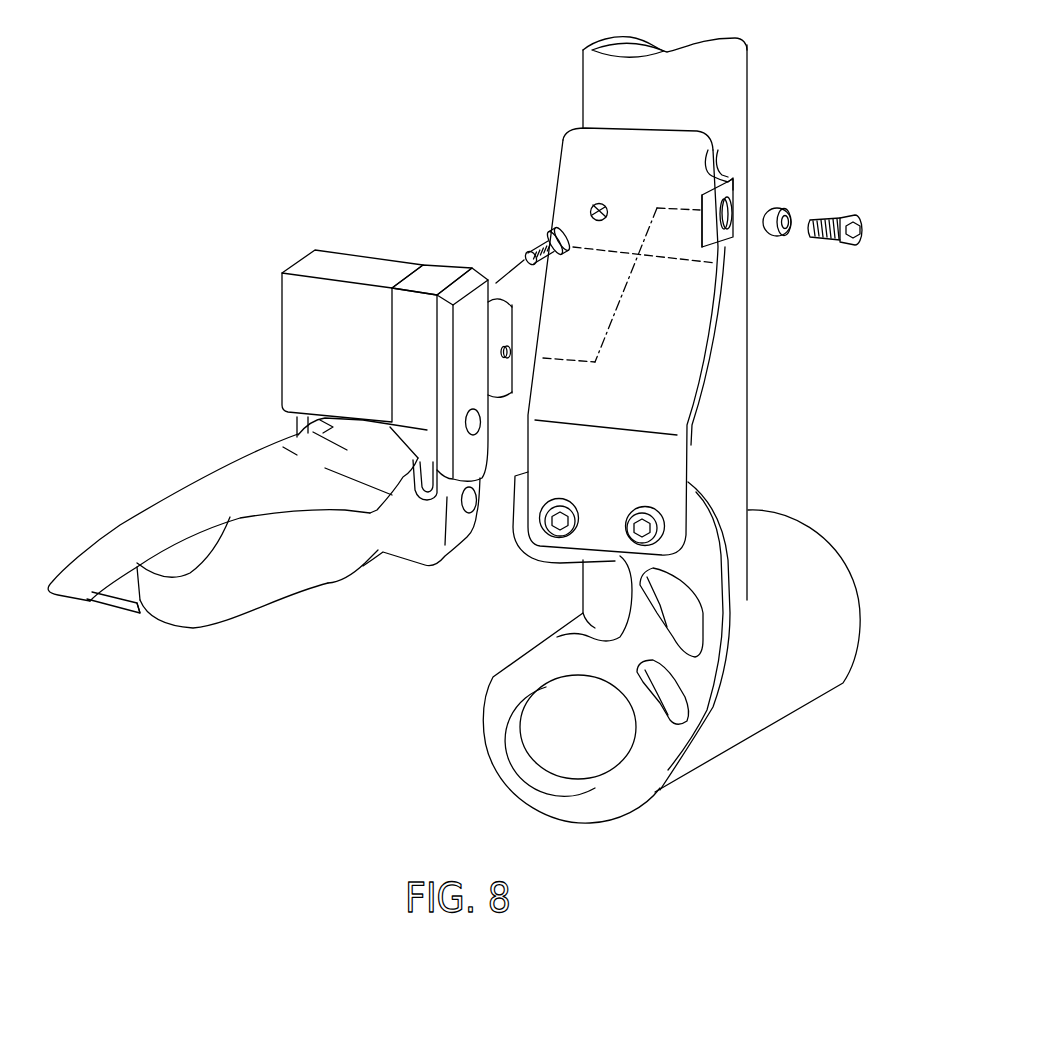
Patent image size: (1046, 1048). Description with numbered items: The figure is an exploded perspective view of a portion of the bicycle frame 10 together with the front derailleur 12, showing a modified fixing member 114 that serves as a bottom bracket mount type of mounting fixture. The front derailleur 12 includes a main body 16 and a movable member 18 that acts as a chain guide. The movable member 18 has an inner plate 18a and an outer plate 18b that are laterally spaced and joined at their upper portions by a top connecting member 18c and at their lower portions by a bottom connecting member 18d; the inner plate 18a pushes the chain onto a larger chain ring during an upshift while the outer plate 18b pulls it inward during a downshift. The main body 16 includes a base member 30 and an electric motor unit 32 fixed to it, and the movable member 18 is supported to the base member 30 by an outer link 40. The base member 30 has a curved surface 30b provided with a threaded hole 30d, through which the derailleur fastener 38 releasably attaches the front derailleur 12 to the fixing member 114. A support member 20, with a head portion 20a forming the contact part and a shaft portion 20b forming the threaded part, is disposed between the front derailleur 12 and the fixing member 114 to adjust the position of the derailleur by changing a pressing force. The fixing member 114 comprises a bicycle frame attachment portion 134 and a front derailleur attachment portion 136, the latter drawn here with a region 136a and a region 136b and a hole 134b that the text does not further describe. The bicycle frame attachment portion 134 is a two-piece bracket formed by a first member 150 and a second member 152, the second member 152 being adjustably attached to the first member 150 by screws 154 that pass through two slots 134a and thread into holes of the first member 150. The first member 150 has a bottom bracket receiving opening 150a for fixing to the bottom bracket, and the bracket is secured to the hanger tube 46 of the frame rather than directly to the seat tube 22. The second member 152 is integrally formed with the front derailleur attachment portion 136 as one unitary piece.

The bicycle frame 10 is at (574, 83).
The front derailleur 12 is at (268, 247).
The main body 16 is at (198, 345).
The movable member 18 is at (137, 494).
The inner plate 18a is at (290, 553).
The outer plate 18b is at (190, 517).
The top connecting member 18c is at (404, 465).
The bottom connecting member 18d is at (110, 598).
The support member 20 is at (452, 175).
The head portion 20a is at (552, 228).
The shaft portion 20b is at (530, 250).
The seat tube 22 is at (750, 104).
The base member 30 is at (291, 428).
The curved surface 30b is at (501, 382).
The threaded hole 30d is at (510, 349).
The electric motor unit 32 is at (275, 355).
The derailleur fastener 38 is at (846, 247).
The outer link 40 is at (477, 473).
The hanger tube 46 is at (768, 718).
The fixing member 114 is at (733, 350).
The bicycle frame attachment portion 134 is at (797, 377).
The slots 134a is at (638, 509).
The bracket screw hole 134b is at (598, 205).
The front derailleur attachment portion 136 is at (693, 233).
The tab slot portion 136a is at (734, 196).
The tab hook portion 136b is at (711, 155).
The first member 150 is at (710, 497).
The bottom bracket receiving opening 150a is at (518, 745).
The second member 152 is at (700, 385).
The screws 154 is at (638, 542).